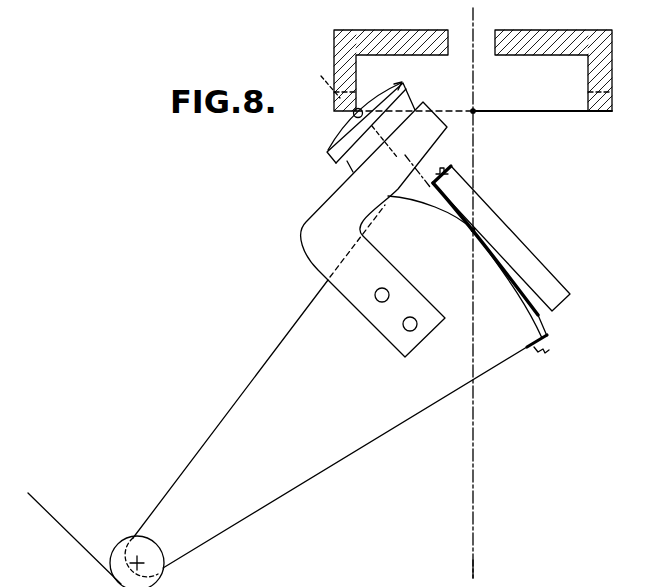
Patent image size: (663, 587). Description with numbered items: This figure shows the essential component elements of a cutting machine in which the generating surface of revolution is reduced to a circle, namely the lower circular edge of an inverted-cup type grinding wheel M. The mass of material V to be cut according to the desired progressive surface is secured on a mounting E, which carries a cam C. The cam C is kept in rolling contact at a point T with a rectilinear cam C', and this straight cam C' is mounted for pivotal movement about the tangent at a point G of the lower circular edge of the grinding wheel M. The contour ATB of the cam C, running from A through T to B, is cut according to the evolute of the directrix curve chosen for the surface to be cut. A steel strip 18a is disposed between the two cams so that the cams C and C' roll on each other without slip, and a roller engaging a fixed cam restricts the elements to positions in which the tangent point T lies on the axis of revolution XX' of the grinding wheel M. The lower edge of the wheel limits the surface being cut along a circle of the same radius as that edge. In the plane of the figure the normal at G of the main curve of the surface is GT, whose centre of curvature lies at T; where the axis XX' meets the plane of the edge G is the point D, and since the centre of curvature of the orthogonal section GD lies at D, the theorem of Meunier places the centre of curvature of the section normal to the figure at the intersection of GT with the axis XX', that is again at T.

The grinding wheel M is at (584, 37).
The axis of revolution X is at (481, 293).
The axis of revolution X' is at (484, 572).
The section of the axis of revolution D is at (480, 102).
The point of the lower circular edge G is at (365, 109).
The mass of material V is at (371, 114).
The mounting E is at (374, 229).
The end point of cam contour A is at (430, 211).
The point of tangency T is at (471, 231).
The rectilinear cam C' is at (516, 238).
The steel strip 18a is at (542, 322).
The end point of cam contour B is at (537, 337).
The cam C is at (286, 394).